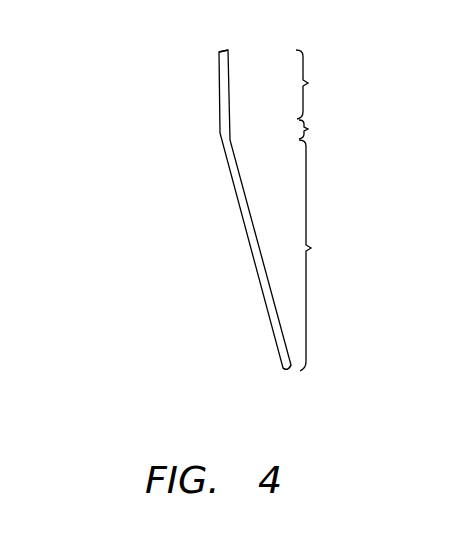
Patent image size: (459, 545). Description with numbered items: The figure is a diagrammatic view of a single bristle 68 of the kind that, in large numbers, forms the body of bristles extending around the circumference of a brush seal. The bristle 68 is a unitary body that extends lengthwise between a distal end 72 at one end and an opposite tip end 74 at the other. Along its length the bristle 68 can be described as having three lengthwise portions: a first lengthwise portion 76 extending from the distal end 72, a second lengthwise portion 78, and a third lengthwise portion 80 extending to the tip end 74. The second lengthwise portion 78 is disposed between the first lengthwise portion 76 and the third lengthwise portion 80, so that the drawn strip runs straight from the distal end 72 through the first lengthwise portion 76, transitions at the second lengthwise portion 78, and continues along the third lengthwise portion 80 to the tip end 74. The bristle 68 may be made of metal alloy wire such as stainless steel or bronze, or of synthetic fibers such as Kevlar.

The bristle 68 is at (168, 183).
The distal end 72 is at (219, 52).
The tip end 74 is at (285, 370).
The first lengthwise portion 76 is at (321, 84).
The second lengthwise portion 78 is at (308, 129).
The third lengthwise portion 80 is at (324, 255).